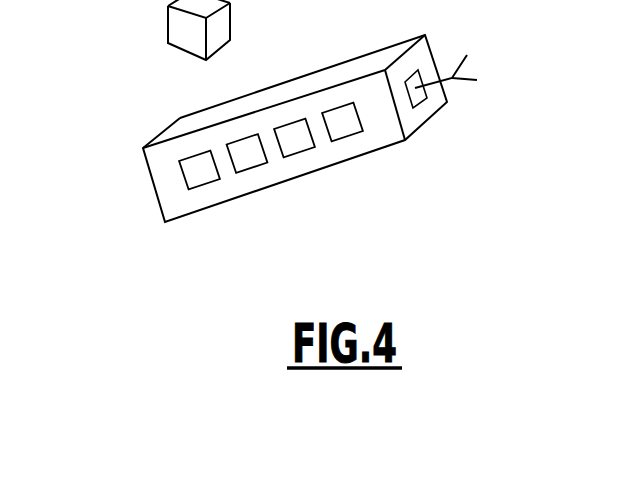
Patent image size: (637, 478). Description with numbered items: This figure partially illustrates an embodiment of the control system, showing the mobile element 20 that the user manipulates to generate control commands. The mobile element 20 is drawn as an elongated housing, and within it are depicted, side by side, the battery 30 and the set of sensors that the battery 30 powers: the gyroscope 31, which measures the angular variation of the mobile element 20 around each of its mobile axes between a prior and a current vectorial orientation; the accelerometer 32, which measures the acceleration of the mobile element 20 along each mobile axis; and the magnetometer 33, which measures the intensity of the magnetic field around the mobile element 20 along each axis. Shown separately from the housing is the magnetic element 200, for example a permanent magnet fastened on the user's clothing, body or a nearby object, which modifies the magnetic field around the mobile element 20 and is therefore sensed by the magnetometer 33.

The mobile element 20 is at (435, 143).
The battery 30 is at (203, 186).
The gyroscope 31 is at (252, 168).
The accelerometer 32 is at (302, 154).
The magnetometer 33 is at (350, 136).
The magnetic element 200 is at (155, 26).